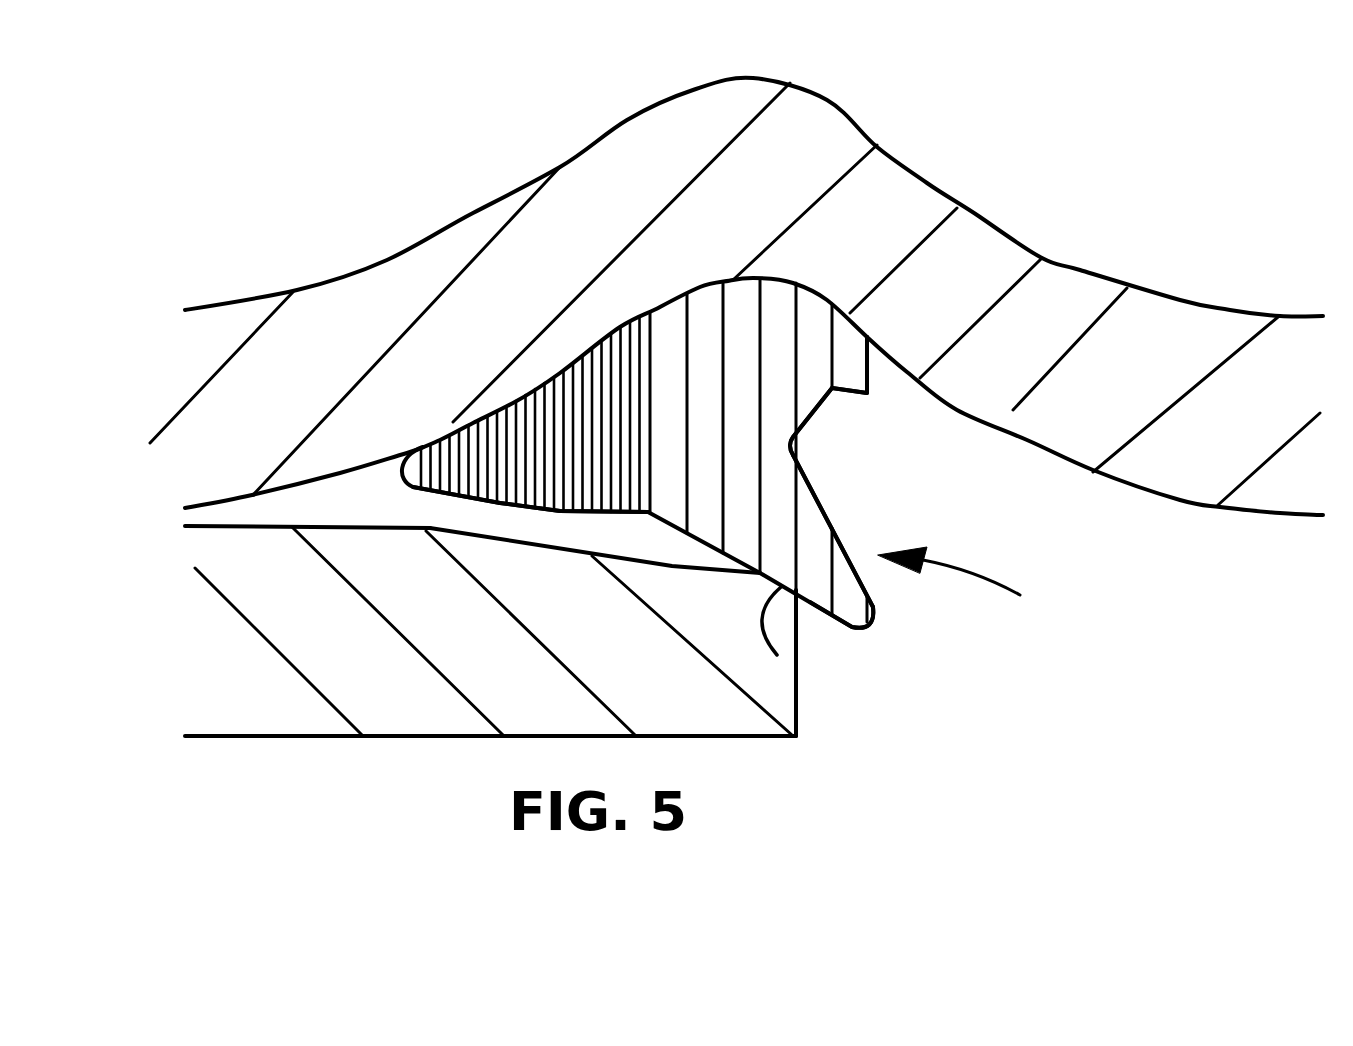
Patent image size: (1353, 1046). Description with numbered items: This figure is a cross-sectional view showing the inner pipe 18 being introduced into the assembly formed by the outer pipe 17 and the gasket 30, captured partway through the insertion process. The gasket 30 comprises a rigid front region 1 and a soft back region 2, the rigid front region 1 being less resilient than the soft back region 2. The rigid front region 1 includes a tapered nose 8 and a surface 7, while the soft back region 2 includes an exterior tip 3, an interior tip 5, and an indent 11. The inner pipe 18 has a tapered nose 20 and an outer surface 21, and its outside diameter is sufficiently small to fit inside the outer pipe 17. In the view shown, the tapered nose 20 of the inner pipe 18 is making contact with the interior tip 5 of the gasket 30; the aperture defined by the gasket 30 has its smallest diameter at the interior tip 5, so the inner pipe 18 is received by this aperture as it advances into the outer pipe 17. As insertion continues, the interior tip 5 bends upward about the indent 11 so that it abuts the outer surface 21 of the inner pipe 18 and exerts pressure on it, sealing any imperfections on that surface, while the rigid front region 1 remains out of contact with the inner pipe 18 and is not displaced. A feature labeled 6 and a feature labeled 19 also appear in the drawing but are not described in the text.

The rigid front region 1 is at (517, 440).
The soft back region 2 is at (777, 350).
The exterior tip 3 is at (880, 372).
The interior tip 5 is at (845, 595).
The tab tip 6 is at (817, 610).
The surface 7 is at (588, 512).
The tapered nose 8 is at (452, 500).
The indent 11 is at (800, 457).
The outer pipe 17 is at (1052, 328).
The inner pipe 18 is at (393, 690).
The lip 19 is at (777, 655).
The tapered nose 20 is at (672, 567).
The outer surface 21 is at (252, 527).
The gasket 30 is at (992, 584).